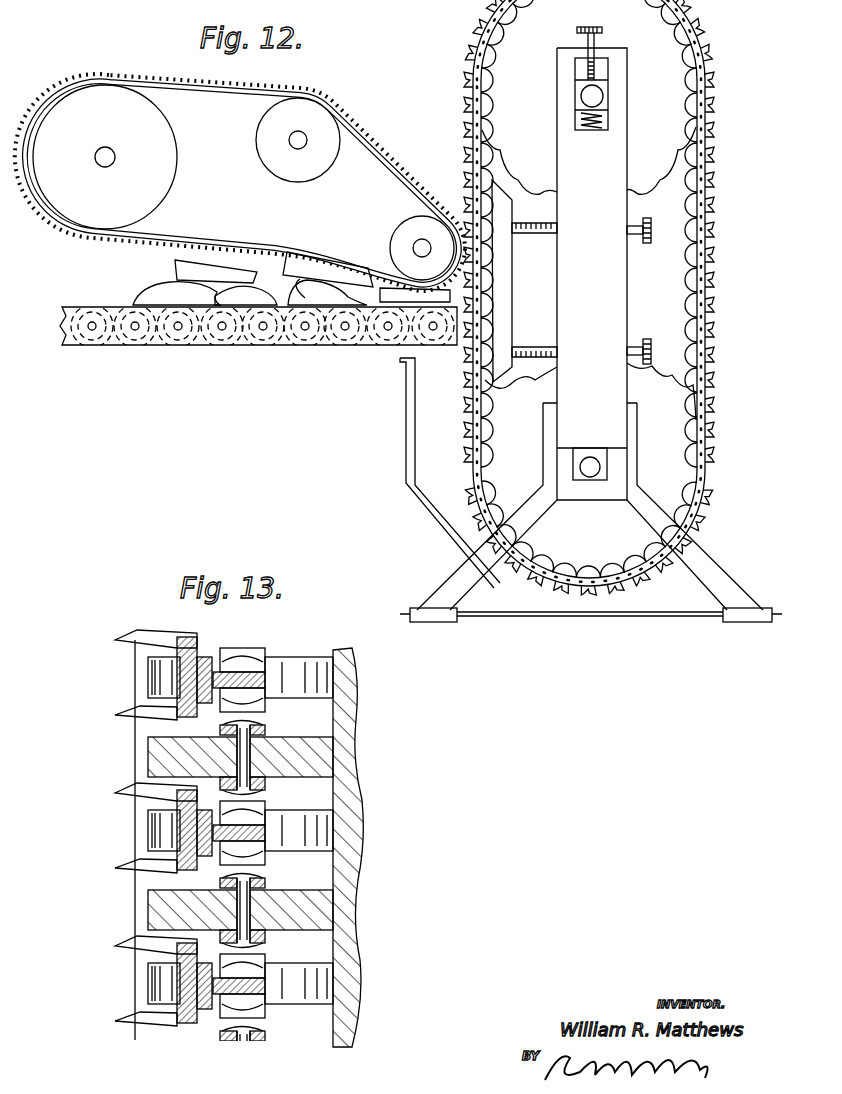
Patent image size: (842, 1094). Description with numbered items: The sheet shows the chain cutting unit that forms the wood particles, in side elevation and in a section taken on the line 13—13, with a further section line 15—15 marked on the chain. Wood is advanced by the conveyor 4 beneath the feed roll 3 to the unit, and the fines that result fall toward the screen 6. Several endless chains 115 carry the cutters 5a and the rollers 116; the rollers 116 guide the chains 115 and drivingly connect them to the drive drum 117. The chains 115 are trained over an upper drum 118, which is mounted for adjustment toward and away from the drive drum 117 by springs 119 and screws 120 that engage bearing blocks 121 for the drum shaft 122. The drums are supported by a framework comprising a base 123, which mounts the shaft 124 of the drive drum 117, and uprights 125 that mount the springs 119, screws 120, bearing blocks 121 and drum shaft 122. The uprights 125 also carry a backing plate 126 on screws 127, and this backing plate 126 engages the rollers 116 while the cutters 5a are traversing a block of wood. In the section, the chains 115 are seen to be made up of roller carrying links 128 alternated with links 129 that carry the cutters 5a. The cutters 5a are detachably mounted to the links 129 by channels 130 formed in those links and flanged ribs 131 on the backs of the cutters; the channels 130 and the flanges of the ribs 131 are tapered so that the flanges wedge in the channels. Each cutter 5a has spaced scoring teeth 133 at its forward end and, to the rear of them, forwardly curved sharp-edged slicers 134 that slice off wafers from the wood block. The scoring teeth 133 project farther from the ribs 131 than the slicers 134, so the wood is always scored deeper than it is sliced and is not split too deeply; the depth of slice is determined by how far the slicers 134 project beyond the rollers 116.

In FIG. 12, the feed roll 3 is at (172, 236).
In FIG. 12, the conveyor 4 is at (262, 335).
In FIG. 12, the cutters 5a is at (717, 200).
In FIG. 13, the cutters 5a is at (133, 898).
In FIG. 12, the screen 6 is at (604, 616).
In FIG. 12, the section line 13— 13 is at (542, 298).
In FIG. 12, the section line 15— 15 is at (458, 297).
In FIG. 12, the endless chains 115 is at (705, 430).
In FIG. 12, the rollers 116 is at (712, 383).
In FIG. 13, the rollers 116 is at (307, 770).
In FIG. 12, the drive drum 117 is at (605, 545).
In FIG. 12, the upper drum 118 is at (538, 134).
In FIG. 12, the springs 119 is at (600, 125).
In FIG. 12, the screws 120 is at (603, 33).
In FIG. 12, the bearing blocks 121 is at (604, 103).
In FIG. 12, the drum shaft 122 is at (582, 94).
In FIG. 12, the base 123 is at (622, 493).
In FIG. 12, the shaft 124 is at (590, 467).
In FIG. 12, the uprights 125 is at (600, 286).
In FIG. 12, the backing plate 126 is at (505, 328).
In FIG. 13, the backing plate 126 is at (362, 805).
In FIG. 12, the screws 127 is at (635, 234).
In FIG. 13, the roller carrying links 128 is at (262, 658).
In FIG. 13, the links 129 is at (226, 660).
In FIG. 13, the channels 130 is at (207, 1012).
In FIG. 13, the flanged ribs 131 is at (190, 1012).
In FIG. 13, the scoring teeth 133 is at (128, 1025).
In FIG. 13, the slicers 134 is at (140, 920).